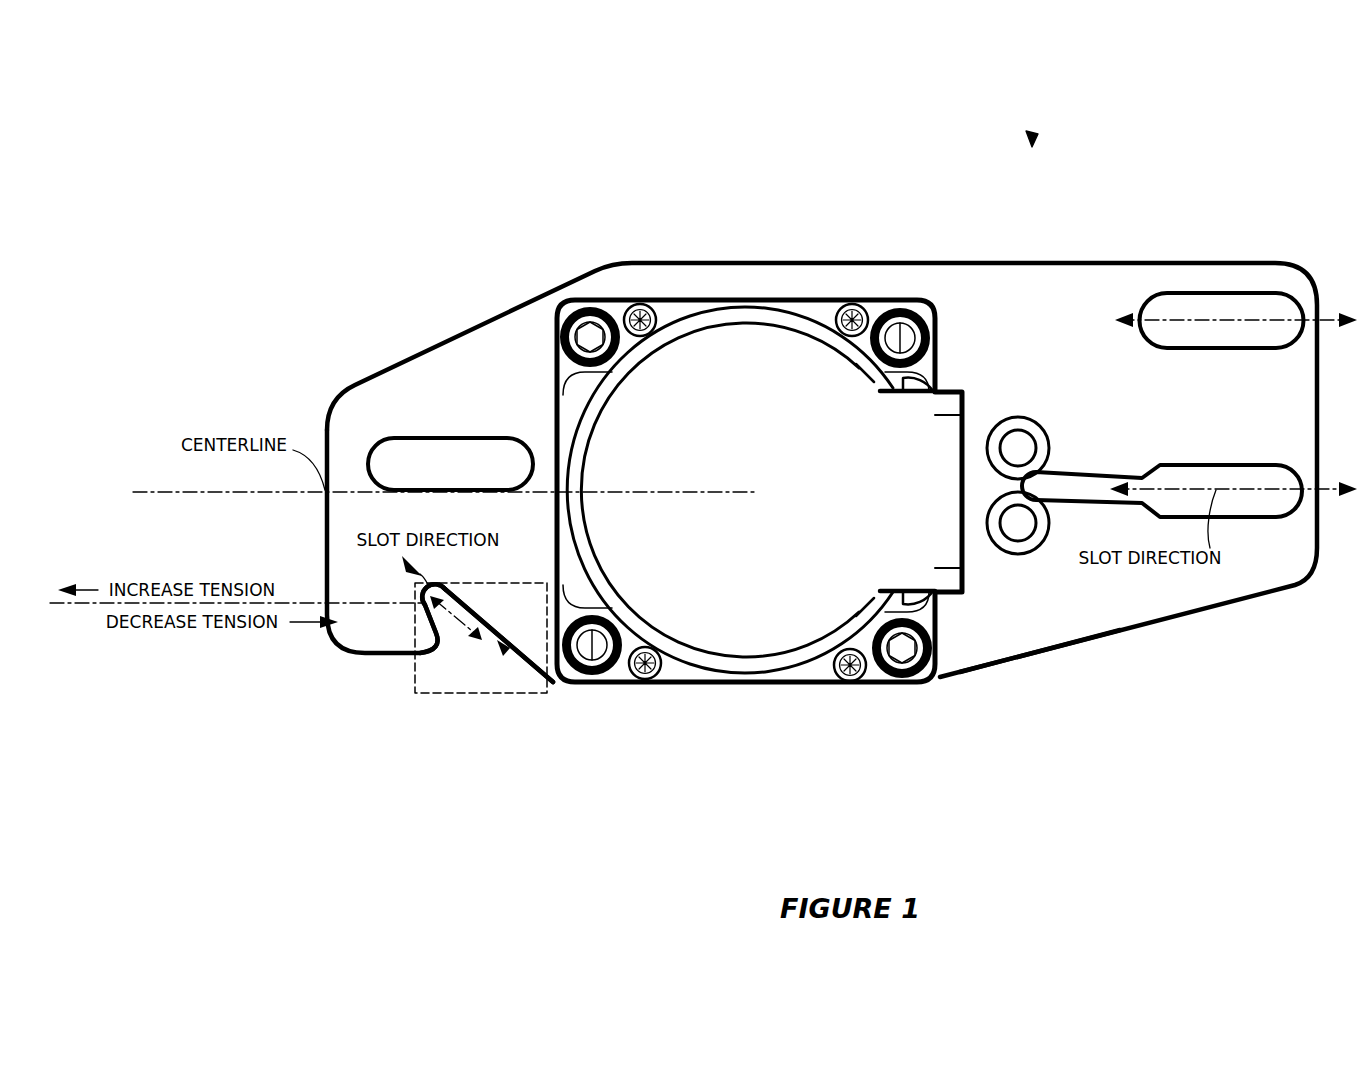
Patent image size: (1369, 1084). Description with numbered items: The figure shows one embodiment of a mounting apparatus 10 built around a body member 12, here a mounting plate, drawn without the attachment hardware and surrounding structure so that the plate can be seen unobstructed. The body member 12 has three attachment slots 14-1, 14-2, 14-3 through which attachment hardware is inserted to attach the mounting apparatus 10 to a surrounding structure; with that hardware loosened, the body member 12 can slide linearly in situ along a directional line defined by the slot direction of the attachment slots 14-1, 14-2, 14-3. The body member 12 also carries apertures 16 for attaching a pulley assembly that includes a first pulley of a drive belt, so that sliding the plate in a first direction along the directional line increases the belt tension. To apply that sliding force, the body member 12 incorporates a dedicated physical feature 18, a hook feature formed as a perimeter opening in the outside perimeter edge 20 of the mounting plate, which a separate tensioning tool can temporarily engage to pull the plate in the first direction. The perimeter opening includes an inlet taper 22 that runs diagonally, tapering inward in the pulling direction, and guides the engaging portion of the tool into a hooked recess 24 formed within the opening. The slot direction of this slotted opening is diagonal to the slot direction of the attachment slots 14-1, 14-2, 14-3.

The mounting apparatus 10 is at (1032, 147).
The body member 12 is at (978, 294).
The attachment slot 14-1 is at (418, 435).
The attachment slot 14-2 is at (1225, 292).
The attachment slot 14-3 is at (1265, 518).
The apertures 16 is at (915, 308).
The dedicated physical feature 18 is at (491, 694).
The outside perimeter edge 20 is at (1017, 660).
The inlet taper 22 is at (498, 640).
The hooked recess 24 is at (463, 628).